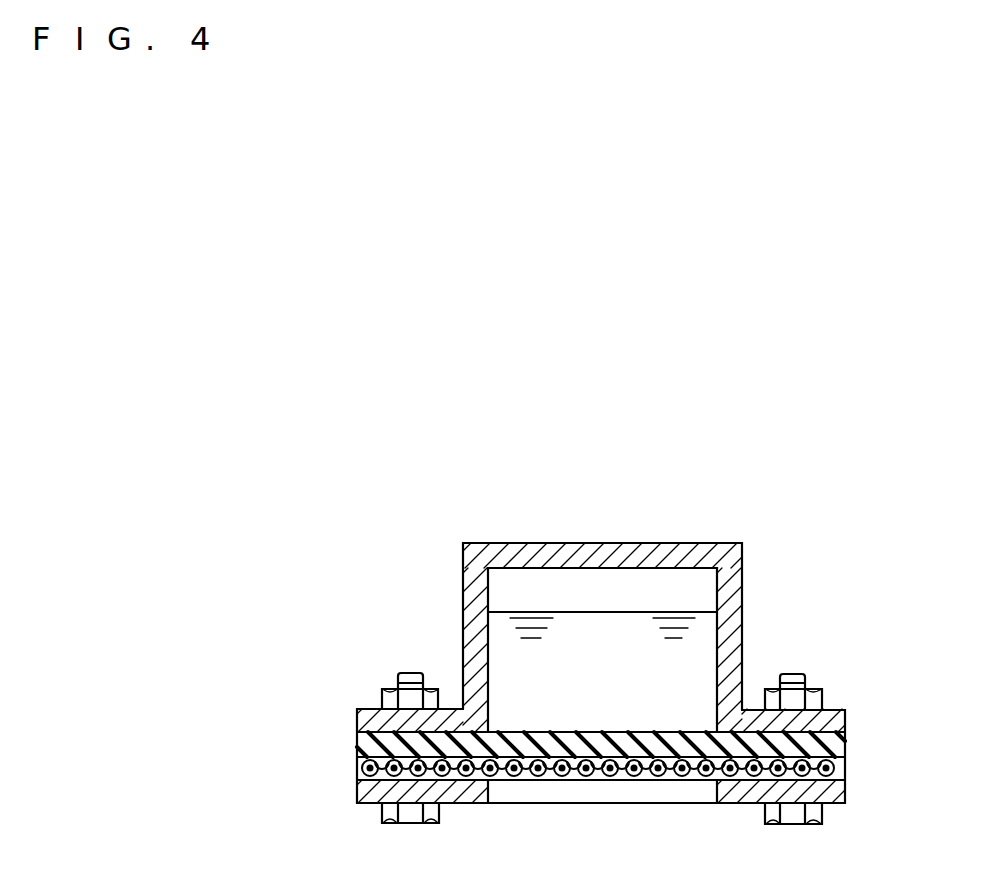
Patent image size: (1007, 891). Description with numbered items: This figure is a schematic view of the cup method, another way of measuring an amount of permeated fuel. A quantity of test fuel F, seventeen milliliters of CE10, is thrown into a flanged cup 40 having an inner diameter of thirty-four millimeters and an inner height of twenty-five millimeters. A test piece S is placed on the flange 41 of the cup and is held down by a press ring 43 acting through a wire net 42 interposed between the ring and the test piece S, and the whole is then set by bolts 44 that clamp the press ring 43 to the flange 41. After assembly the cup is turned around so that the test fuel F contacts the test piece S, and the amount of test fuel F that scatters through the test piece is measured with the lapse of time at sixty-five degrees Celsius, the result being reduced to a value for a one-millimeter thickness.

The flanged cup 40 is at (732, 617).
The test fuel F is at (606, 628).
The flange 41 is at (448, 708).
The test piece S is at (843, 736).
The wire net 42 is at (838, 770).
The press ring 43 is at (737, 797).
The bolts 44 is at (815, 813).